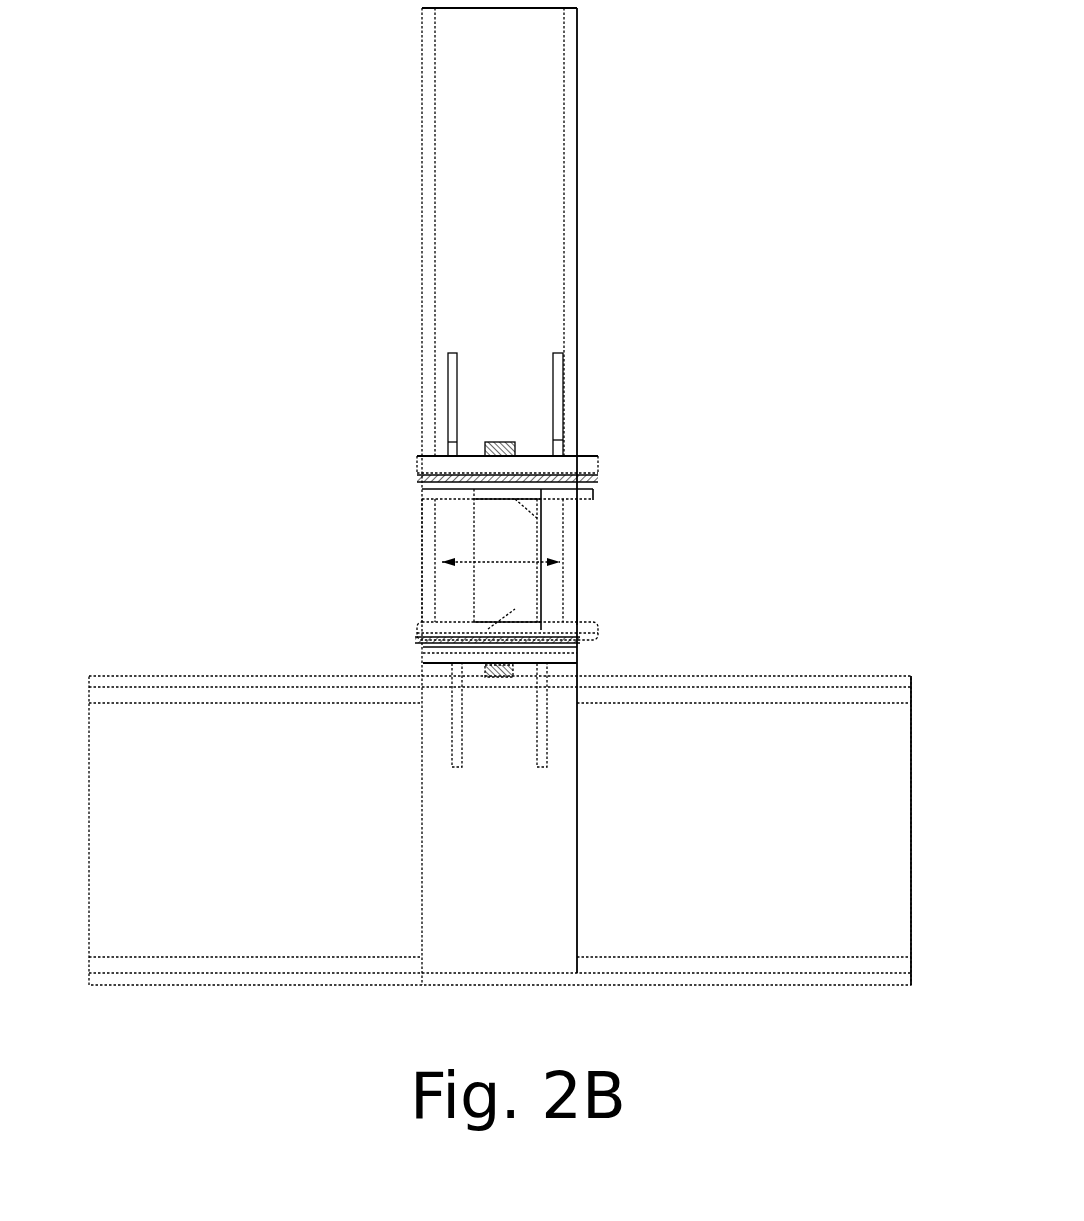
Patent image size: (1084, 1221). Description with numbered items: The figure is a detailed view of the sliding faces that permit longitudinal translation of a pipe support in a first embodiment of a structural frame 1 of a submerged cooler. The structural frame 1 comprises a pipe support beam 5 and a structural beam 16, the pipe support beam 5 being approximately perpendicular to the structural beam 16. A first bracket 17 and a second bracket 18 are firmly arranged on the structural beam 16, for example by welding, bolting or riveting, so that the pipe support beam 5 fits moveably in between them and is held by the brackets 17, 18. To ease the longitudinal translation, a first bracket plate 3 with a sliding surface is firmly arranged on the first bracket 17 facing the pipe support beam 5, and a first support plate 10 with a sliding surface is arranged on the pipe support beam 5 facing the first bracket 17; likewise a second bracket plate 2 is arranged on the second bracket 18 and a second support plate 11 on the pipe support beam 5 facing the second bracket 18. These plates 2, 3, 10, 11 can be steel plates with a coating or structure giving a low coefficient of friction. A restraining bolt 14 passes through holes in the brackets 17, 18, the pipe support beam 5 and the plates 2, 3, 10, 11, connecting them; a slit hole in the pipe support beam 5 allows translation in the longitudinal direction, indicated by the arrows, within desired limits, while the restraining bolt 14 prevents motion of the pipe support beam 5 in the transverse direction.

The structural frame 1 is at (343, 725).
The second bracket plate 2 is at (423, 650).
The first bracket plate 3 is at (417, 473).
The pipe support beam 5 is at (543, 574).
The first support plate 10 is at (595, 483).
The second support plate 11 is at (580, 642).
The restraining bolt 14 is at (508, 445).
The structural beam 16 is at (512, 273).
The first bracket 17 is at (453, 392).
The second bracket 18 is at (458, 735).